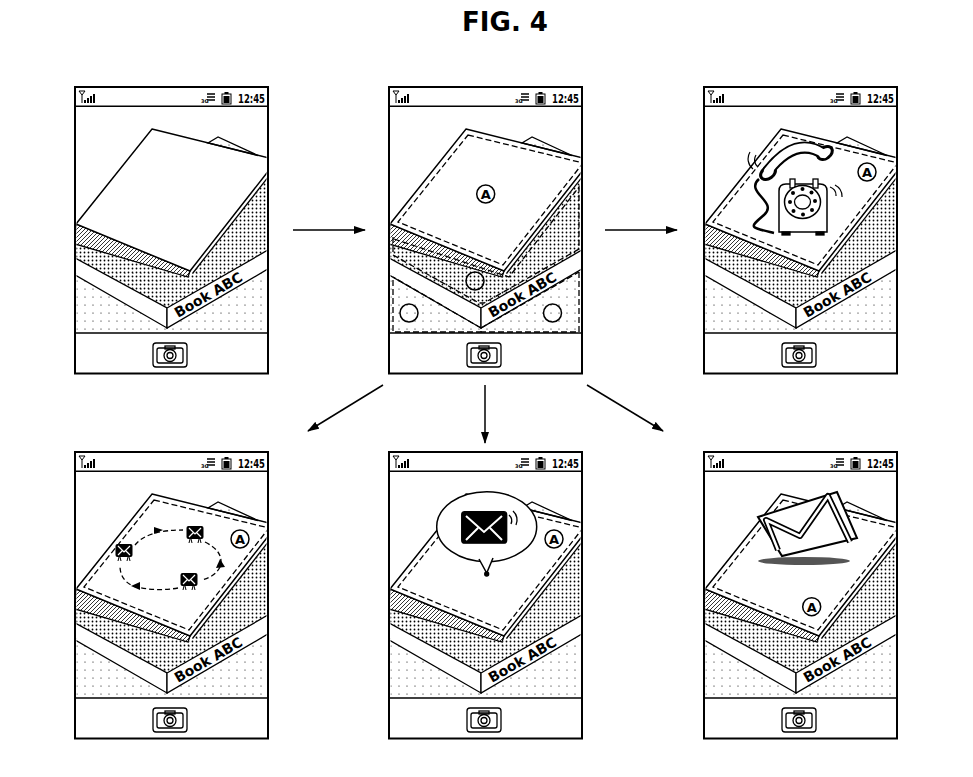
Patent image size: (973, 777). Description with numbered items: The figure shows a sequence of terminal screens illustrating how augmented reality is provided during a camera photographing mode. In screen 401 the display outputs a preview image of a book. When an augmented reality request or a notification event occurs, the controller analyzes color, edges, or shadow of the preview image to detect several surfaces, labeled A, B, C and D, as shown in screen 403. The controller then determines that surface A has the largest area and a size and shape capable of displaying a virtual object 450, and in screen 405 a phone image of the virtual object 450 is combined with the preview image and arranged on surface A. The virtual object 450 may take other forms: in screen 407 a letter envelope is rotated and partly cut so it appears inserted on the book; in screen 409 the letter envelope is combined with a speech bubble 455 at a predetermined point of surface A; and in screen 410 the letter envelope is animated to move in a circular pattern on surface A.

The screen 401 is at (177, 214).
The screen 403 is at (491, 214).
The screen 405 is at (806, 214).
The screen 407 is at (806, 580).
The screen 409 is at (512, 580).
The screen 410 is at (177, 580).
The virtual object 450 is at (492, 370).
The speech bubble 455 is at (536, 529).